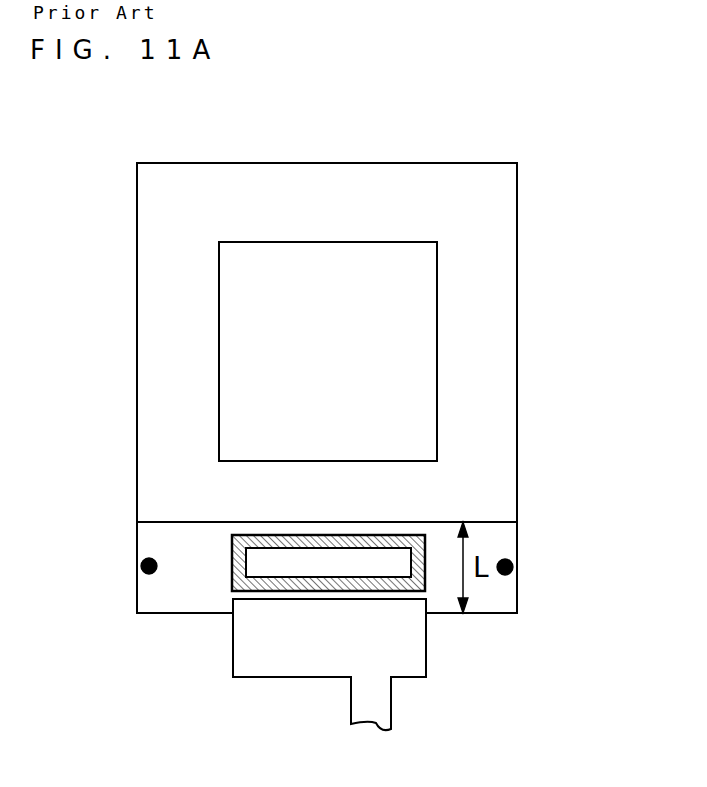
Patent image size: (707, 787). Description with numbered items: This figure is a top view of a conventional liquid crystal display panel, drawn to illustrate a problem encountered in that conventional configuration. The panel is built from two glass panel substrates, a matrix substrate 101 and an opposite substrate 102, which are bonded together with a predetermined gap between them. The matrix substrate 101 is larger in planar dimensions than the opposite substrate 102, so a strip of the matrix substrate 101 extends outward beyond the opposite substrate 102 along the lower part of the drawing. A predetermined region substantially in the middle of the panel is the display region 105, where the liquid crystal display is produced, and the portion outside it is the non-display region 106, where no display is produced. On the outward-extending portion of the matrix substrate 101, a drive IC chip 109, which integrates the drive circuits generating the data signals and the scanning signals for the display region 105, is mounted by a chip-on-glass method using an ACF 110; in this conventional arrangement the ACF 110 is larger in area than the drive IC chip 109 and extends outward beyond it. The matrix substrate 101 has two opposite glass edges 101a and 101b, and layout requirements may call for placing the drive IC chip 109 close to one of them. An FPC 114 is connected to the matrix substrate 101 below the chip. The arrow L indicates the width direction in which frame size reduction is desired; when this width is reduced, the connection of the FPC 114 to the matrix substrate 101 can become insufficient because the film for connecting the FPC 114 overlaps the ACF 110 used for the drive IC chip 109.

The matrix substrate 101 is at (341, 601).
The glass edge 101a is at (137, 593).
The glass edge 101b is at (517, 590).
The opposite substrate 102 is at (373, 388).
The display region 105 is at (240, 343).
The non-display region 106 is at (498, 432).
The drive IC chip 109 is at (380, 560).
The ACF 110 is at (337, 530).
The FPC 114 is at (276, 671).